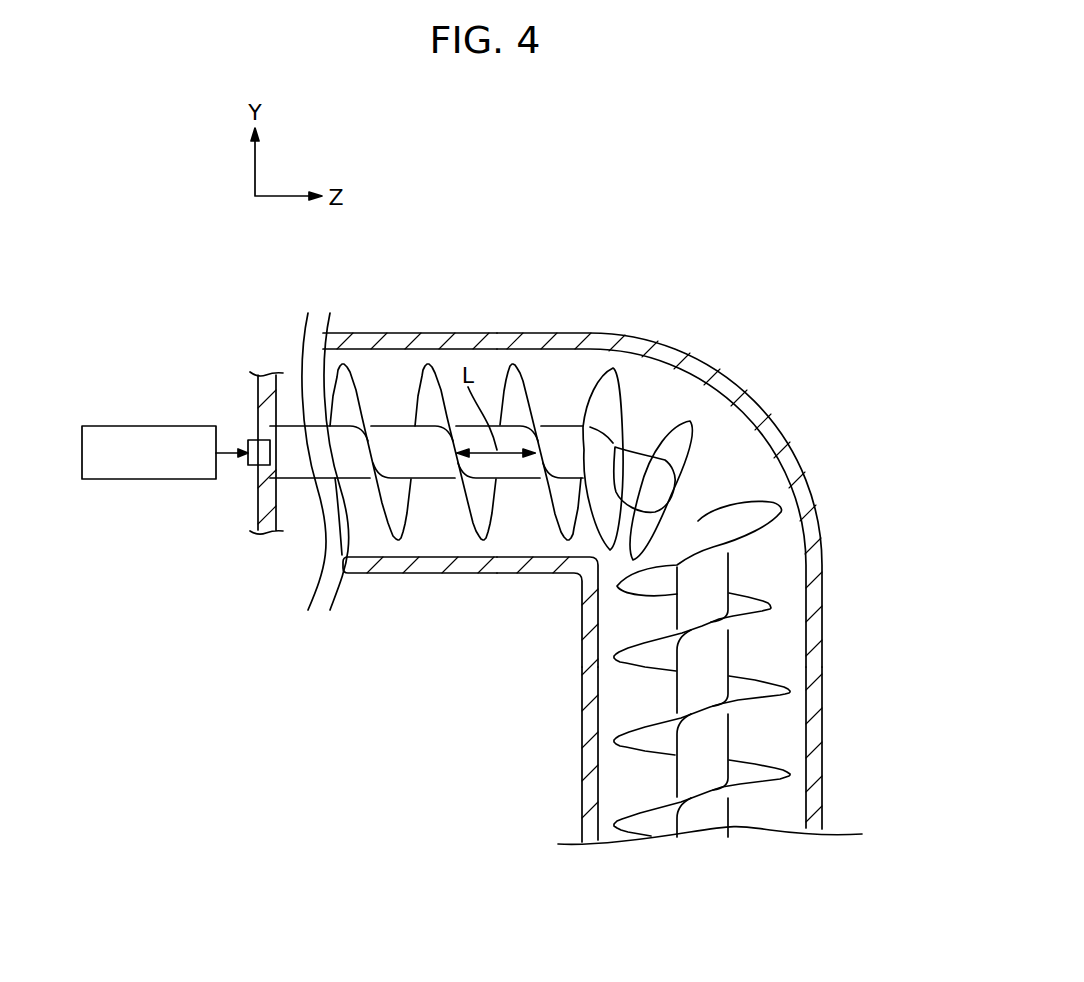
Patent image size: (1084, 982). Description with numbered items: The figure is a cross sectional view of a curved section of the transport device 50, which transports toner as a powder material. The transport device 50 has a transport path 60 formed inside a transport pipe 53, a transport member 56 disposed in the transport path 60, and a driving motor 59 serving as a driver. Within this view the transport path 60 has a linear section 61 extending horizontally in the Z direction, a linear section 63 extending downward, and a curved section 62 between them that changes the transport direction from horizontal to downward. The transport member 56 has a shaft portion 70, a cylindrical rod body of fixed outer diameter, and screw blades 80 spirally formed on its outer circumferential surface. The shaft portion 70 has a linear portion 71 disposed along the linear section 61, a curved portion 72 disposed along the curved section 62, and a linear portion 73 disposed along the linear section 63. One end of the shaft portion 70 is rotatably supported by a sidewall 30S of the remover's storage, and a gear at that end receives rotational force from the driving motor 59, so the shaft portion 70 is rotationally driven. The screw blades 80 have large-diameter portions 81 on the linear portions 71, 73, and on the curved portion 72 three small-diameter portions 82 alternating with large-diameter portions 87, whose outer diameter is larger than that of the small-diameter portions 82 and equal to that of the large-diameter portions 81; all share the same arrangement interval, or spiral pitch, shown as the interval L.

The transport device 50 is at (797, 285).
The transport pipe 53 is at (837, 803).
The transport member 56 is at (759, 819).
The driving motor 59 is at (156, 480).
The transport path 60 is at (612, 838).
The linear section 61 is at (410, 478).
The curved section 62 is at (652, 500).
The linear section 63 is at (652, 750).
The shaft portion 70 is at (701, 464).
The linear portion 71 is at (492, 580).
The curved portion 72 is at (573, 668).
The linear portion 73 is at (561, 838).
The screw blades 80 is at (752, 484).
The large-diameter portion 81 is at (791, 775).
The small-diameter portion 82 is at (772, 605).
The large-diameter portion 87 is at (784, 509).
The sidewall 30S is at (258, 390).